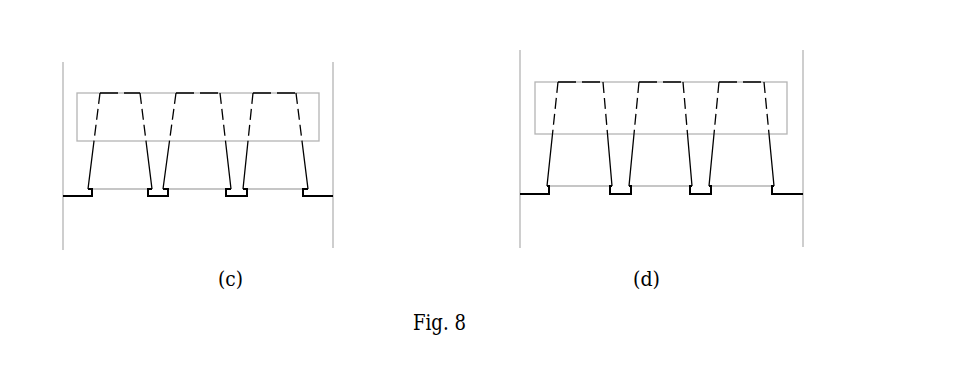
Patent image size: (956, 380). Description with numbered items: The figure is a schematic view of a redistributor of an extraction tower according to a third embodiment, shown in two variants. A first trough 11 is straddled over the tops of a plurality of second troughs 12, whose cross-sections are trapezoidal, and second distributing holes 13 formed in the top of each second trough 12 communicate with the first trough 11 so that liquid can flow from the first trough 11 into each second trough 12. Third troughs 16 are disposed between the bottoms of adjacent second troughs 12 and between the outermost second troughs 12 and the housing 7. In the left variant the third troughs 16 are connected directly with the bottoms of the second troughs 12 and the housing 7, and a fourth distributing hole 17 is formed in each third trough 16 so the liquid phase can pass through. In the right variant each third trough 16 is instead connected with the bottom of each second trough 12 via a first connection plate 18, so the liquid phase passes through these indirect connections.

The housing 7 is at (333, 100).
The first trough 11 is at (88, 131).
The second trough 12 is at (87, 175).
The second distributing hole 13 is at (117, 93).
The third trough 16 is at (150, 195).
The fourth distributing hole 17 is at (228, 197).
The first connection plate 18 is at (628, 192).